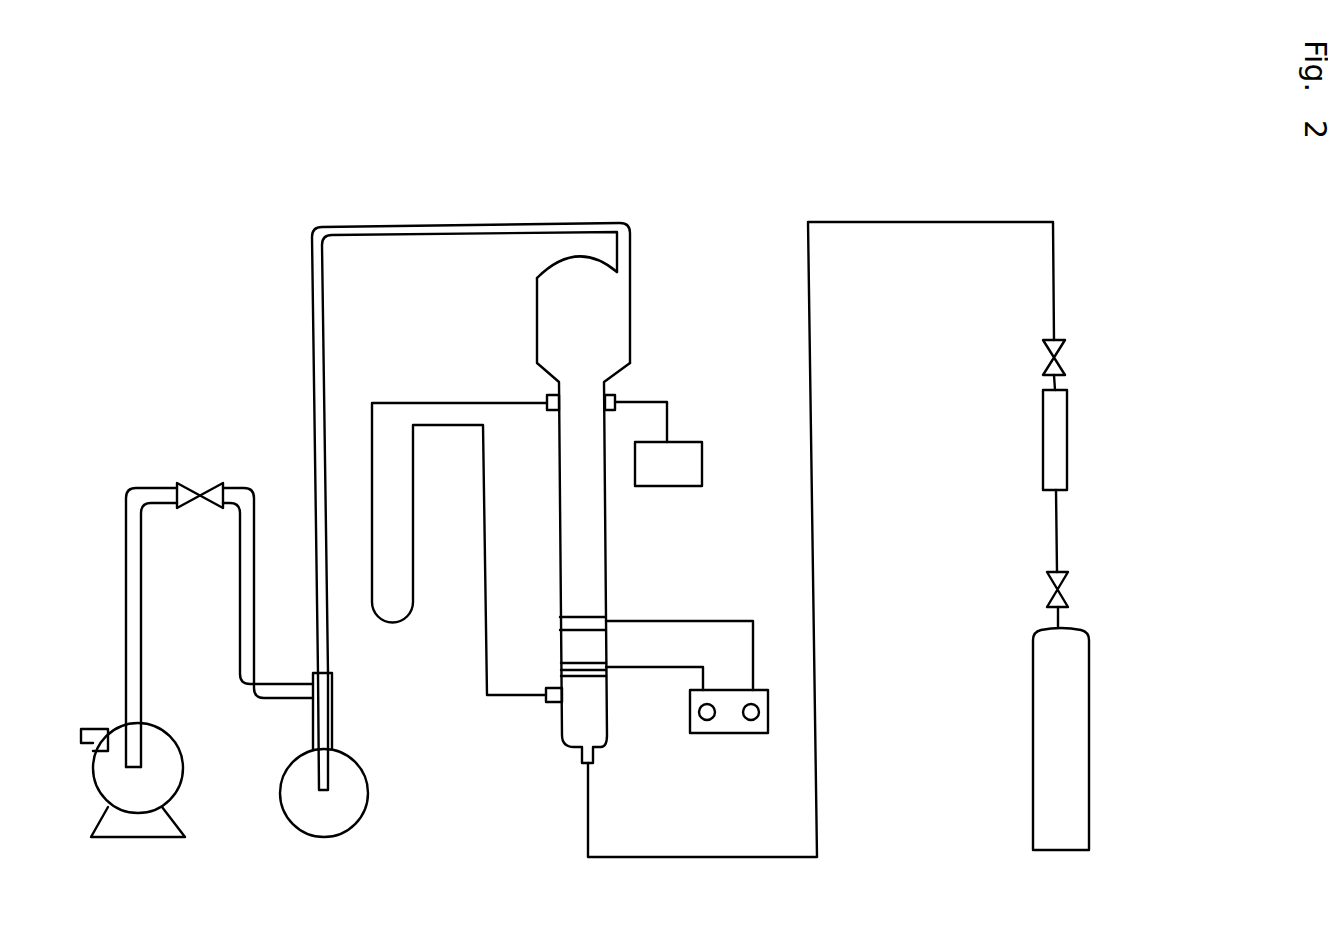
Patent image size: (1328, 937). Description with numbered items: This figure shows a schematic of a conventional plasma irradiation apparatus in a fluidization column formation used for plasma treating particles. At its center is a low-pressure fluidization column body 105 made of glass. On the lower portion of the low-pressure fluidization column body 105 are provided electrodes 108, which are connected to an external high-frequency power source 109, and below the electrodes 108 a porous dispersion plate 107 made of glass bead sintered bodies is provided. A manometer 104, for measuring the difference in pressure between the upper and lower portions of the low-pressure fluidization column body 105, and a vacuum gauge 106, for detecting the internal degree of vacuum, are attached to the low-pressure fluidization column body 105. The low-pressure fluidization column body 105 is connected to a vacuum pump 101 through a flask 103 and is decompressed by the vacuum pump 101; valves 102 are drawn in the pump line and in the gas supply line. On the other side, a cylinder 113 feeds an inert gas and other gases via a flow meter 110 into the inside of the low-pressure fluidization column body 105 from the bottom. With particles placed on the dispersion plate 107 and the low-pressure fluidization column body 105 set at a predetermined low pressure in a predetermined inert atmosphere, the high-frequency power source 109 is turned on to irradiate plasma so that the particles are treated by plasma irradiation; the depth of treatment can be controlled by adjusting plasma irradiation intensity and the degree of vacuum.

The vacuum pump 101 is at (183, 781).
The valve 102 is at (212, 487).
The flask 103 is at (368, 800).
The manometer 104 is at (415, 563).
The low-pressure fluidization column body 105 is at (604, 533).
The vacuum gauge 106 is at (702, 462).
The porous dispersion plate 107 is at (607, 678).
The electrodes 108 is at (562, 665).
The high-frequency power source 109 is at (750, 733).
The flow meter 110 is at (1067, 432).
The cylinder 113 is at (1065, 748).